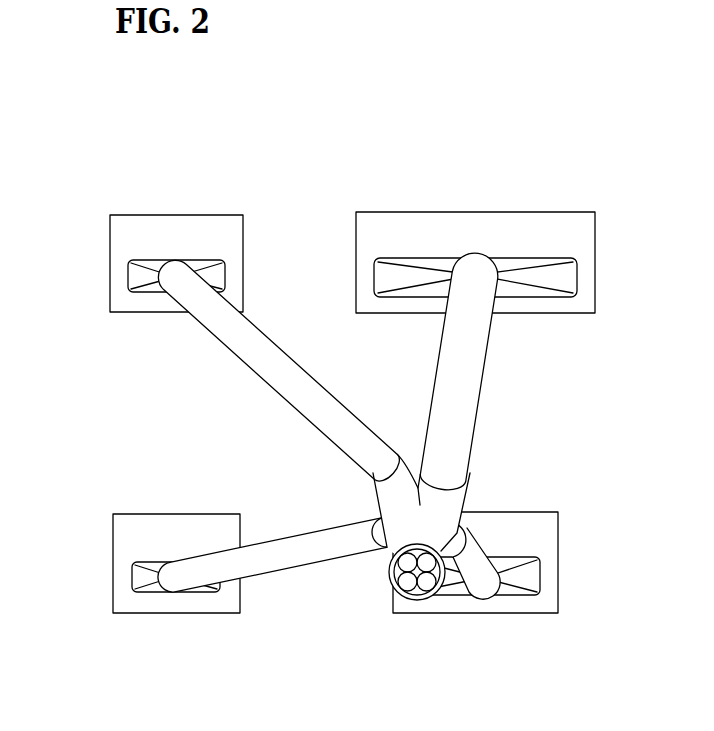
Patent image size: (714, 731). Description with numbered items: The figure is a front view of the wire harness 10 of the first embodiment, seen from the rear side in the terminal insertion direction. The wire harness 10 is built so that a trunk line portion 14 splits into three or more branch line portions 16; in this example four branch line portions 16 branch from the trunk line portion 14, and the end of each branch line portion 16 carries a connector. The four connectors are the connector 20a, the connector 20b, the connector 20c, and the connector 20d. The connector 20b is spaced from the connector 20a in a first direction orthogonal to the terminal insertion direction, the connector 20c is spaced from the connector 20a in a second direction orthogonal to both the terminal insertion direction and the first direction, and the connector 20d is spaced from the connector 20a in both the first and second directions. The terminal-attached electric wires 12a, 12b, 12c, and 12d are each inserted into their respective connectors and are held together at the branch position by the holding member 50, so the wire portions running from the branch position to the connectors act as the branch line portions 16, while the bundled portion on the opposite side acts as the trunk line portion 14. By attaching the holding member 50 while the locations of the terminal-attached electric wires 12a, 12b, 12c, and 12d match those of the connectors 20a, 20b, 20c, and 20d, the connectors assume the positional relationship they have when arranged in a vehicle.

The wire harness 10 is at (241, 166).
The terminal-attached electric wire 12a is at (222, 342).
The terminal-attached electric wire 12b is at (486, 353).
The terminal-attached electric wire 12c is at (262, 571).
The terminal-attached electric wire 12d is at (482, 588).
The trunk line portion 14 is at (493, 657).
The branch line portion 16 is at (410, 504).
The connector 20a is at (182, 213).
The connector 20b is at (408, 211).
The connector 20c is at (162, 513).
The connector 20d is at (532, 511).
The holding member 50 is at (388, 573).